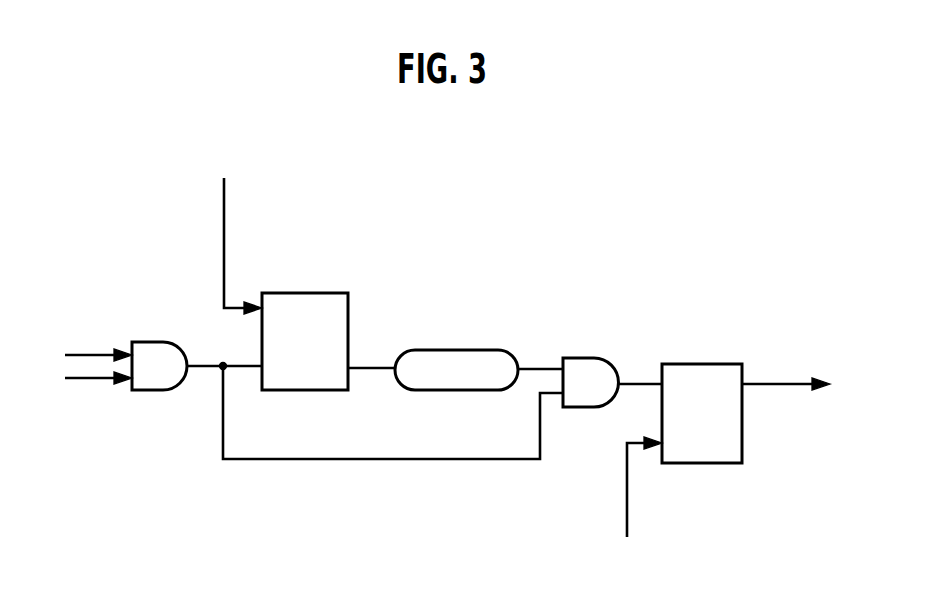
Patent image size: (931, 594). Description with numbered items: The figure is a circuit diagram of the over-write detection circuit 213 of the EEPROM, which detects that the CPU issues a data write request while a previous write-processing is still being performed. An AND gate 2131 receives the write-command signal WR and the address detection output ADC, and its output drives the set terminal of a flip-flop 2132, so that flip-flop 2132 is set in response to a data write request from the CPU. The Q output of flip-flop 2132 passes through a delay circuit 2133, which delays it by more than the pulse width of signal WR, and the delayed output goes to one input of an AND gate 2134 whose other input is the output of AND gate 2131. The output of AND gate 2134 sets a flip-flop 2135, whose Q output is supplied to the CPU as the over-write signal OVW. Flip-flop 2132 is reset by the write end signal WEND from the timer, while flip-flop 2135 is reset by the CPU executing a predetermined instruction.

The over-write detection circuit 213 is at (466, 221).
The AND gate 2131 is at (163, 349).
The flip-flop 2132 is at (348, 308).
The delay circuit 2133 is at (480, 358).
The AND gate 2134 is at (599, 362).
The flip-flop 2135 is at (714, 368).